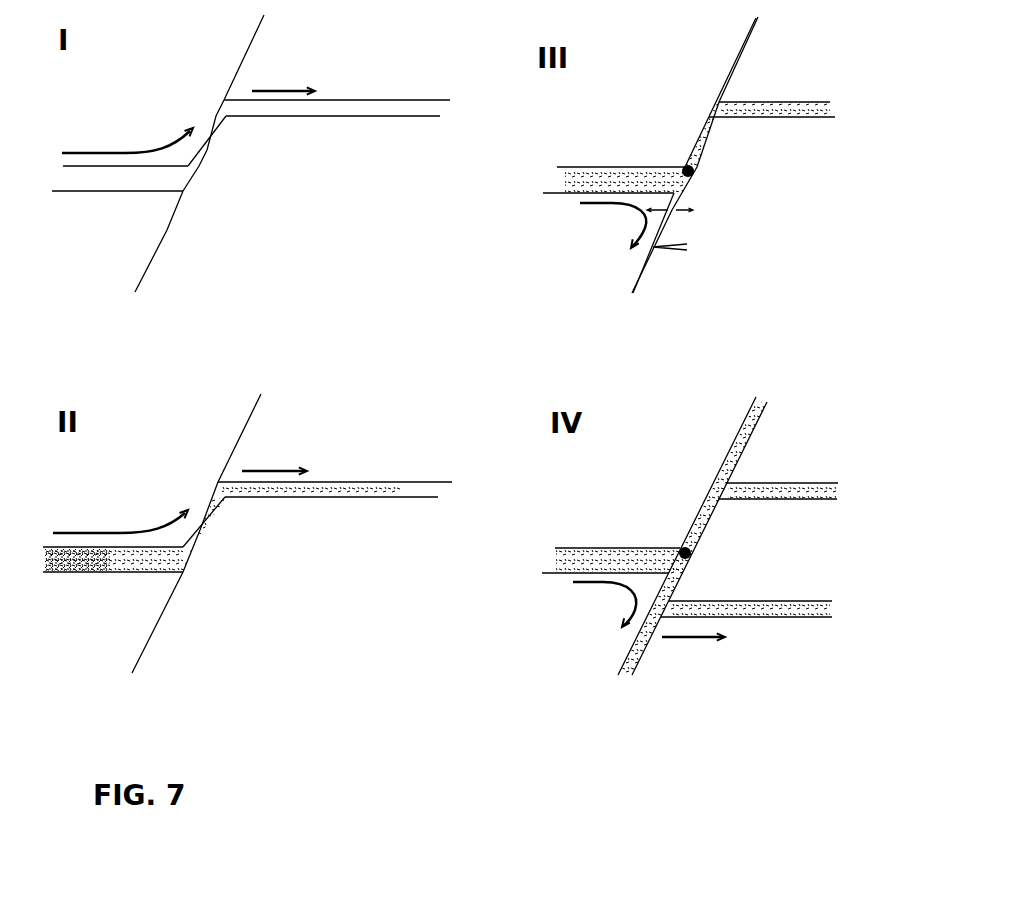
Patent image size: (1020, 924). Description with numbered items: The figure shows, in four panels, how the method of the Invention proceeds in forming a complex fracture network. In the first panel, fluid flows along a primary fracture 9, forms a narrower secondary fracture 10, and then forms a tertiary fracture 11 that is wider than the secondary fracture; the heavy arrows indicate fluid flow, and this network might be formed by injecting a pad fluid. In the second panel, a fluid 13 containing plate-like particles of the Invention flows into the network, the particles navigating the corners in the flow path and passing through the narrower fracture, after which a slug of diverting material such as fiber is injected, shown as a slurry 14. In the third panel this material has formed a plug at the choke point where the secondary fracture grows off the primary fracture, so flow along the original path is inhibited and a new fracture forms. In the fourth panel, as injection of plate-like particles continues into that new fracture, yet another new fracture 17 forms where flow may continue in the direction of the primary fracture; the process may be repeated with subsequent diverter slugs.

The primary fracture 9 is at (75, 207).
The secondary fracture 10 is at (234, 152).
The tertiary fracture 11 is at (360, 143).
The fluid containing plate-like particles 13 is at (307, 522).
The slurry of diverting material 14 is at (64, 587).
The another new fracture 17 is at (803, 639).